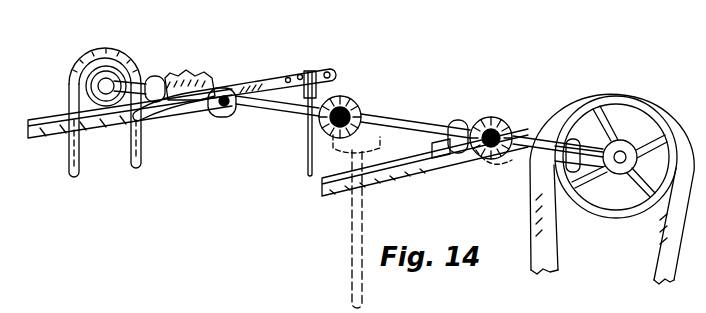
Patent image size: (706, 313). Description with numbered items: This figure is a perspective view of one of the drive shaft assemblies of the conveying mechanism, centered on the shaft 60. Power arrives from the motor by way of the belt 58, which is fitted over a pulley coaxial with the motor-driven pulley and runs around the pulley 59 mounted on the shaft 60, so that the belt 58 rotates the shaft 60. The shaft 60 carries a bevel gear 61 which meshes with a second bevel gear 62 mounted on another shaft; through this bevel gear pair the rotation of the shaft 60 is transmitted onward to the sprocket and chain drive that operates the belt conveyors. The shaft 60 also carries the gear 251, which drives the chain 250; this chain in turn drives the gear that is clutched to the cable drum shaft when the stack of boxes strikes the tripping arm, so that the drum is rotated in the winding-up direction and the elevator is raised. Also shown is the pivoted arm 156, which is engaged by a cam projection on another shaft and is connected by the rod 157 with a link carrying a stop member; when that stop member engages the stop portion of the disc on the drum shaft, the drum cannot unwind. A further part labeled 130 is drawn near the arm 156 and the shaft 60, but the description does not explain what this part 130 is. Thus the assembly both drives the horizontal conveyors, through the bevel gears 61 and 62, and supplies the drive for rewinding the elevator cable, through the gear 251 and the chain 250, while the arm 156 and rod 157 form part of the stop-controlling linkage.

The gear 251 is at (119, 58).
The chain 250 is at (72, 166).
The clamp 130 is at (190, 82).
The pivoted arm 156 is at (168, 101).
The rod 157 is at (308, 142).
The shaft 60 is at (405, 123).
The bevel gear 61 is at (492, 122).
The second bevel gear 62 is at (505, 163).
The pulley 59 is at (630, 218).
The belt 58 is at (660, 243).